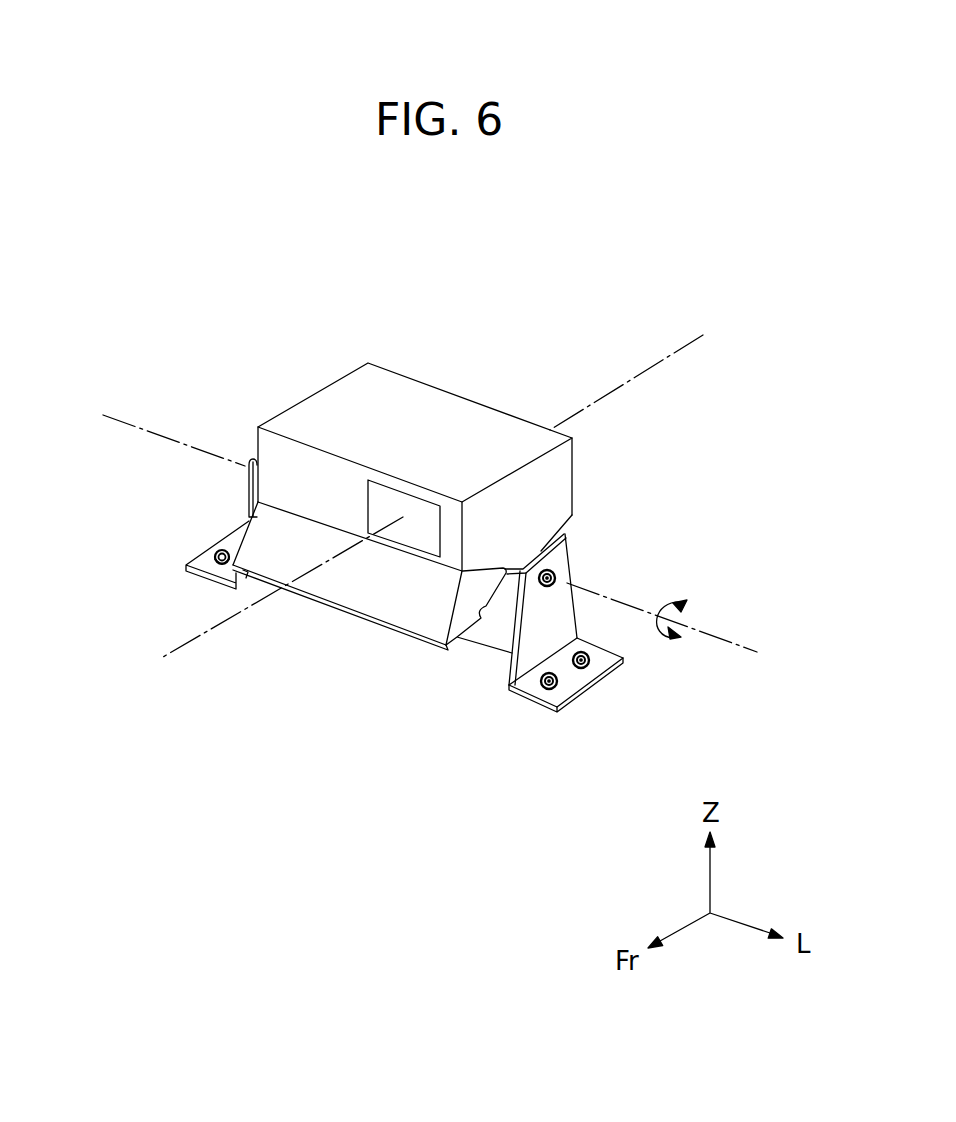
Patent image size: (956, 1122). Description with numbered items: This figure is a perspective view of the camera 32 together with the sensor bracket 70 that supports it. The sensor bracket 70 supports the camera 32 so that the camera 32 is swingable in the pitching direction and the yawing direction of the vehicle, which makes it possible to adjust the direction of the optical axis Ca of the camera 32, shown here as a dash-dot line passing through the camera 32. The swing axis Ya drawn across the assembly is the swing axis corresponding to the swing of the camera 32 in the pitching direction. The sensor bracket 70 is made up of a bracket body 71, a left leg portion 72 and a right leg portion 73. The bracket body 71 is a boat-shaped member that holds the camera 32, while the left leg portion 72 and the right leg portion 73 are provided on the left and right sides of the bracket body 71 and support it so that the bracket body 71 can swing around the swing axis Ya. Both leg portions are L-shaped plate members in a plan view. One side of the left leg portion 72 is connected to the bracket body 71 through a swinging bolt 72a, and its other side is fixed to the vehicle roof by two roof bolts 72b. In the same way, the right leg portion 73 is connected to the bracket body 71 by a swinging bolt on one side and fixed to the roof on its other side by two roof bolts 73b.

The camera 32 is at (318, 394).
The sensor bracket 70 is at (366, 622).
The bracket body 71 is at (478, 628).
The left leg portion 72 is at (582, 641).
The swinging bolt 72a is at (558, 566).
The roof bolts 72b is at (567, 684).
The right leg portion 73 is at (154, 539).
The roof bolts 73b is at (218, 551).
The optical axis Ca is at (190, 654).
The swing axis Ya is at (713, 630).